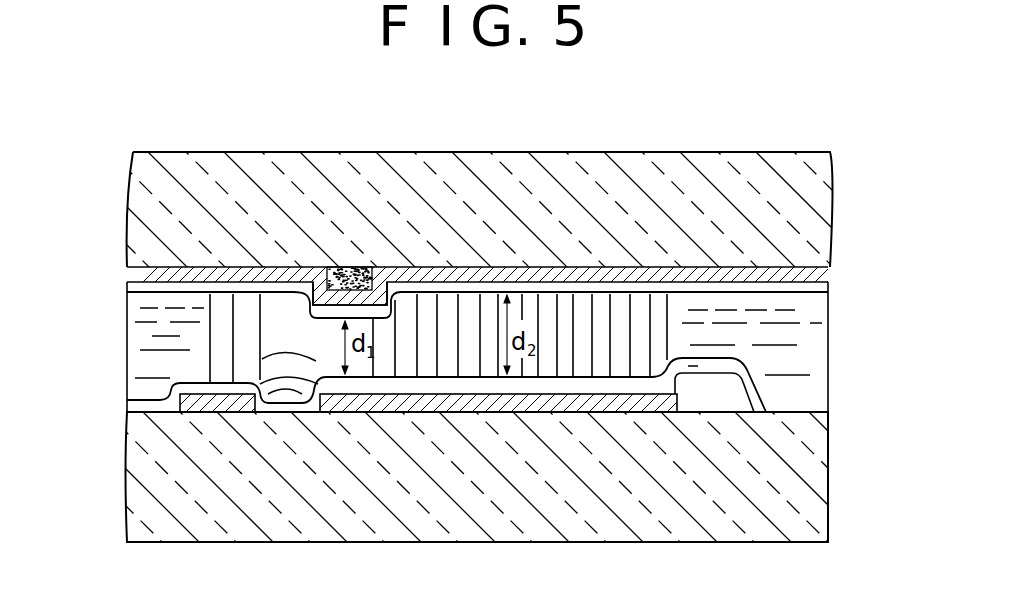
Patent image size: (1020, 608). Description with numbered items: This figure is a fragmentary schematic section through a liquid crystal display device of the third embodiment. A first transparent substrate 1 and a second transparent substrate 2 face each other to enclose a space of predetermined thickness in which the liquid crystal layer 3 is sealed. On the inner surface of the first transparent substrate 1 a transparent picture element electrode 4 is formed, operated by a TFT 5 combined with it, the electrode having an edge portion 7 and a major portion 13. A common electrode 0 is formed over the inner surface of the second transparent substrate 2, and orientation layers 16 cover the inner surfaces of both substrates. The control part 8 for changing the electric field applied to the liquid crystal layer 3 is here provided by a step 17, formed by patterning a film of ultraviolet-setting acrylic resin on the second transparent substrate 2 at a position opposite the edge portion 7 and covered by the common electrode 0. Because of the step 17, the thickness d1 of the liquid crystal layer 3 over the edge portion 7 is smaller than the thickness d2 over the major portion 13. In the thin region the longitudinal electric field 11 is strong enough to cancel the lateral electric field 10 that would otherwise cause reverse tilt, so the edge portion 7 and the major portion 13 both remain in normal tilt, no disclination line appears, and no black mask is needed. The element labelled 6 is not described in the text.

The first transparent substrate 1 is at (803, 470).
The second transparent substrate 2 is at (803, 221).
The common electrode 0 is at (813, 273).
The liquid crystal layer 3 is at (807, 341).
The picture element electrode 4 is at (658, 413).
The TFT 5 is at (725, 400).
The pixel electrode 6 is at (210, 404).
The edge portion 7 is at (357, 400).
The control part 8 is at (378, 261).
The lateral electric field 10 is at (287, 389).
The longitudinal electric field 11 is at (568, 309).
The major portion 13 is at (555, 413).
The orientation layers 16 is at (150, 288).
The step 17 is at (352, 267).